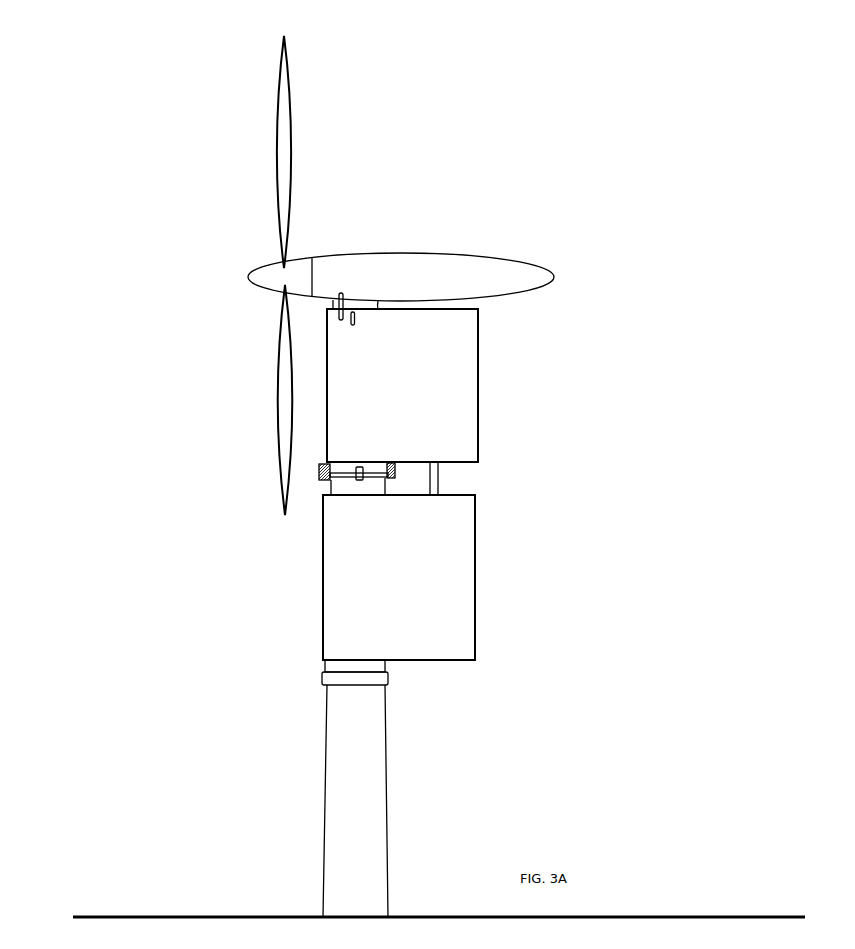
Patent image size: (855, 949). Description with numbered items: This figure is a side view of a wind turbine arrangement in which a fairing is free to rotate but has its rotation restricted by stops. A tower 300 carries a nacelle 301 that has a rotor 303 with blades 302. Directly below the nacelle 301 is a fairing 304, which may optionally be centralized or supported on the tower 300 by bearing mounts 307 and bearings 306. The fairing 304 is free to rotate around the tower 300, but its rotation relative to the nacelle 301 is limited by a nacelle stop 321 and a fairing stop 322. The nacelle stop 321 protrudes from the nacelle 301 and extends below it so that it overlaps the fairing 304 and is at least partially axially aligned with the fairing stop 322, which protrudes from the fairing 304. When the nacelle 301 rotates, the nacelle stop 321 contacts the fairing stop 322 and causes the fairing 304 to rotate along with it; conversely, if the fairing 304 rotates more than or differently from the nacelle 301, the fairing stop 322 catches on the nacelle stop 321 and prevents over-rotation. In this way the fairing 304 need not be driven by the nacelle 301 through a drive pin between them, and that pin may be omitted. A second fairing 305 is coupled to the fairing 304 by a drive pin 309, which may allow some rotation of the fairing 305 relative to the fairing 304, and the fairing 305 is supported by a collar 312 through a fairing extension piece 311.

The tower 300 is at (389, 721).
The nacelle 301 is at (557, 277).
The blades 302 is at (277, 468).
The rotor 303 is at (259, 288).
The fairing 304 is at (481, 375).
The fairing 305 is at (478, 558).
The bearings 306 is at (332, 470).
The bearing mounts 307 is at (385, 481).
The drive pin 309 is at (441, 481).
The fairing extension piece 311 is at (323, 665).
The collar 312 is at (392, 678).
The nacelle stop 321 is at (346, 290).
The fairing stop 322 is at (358, 318).